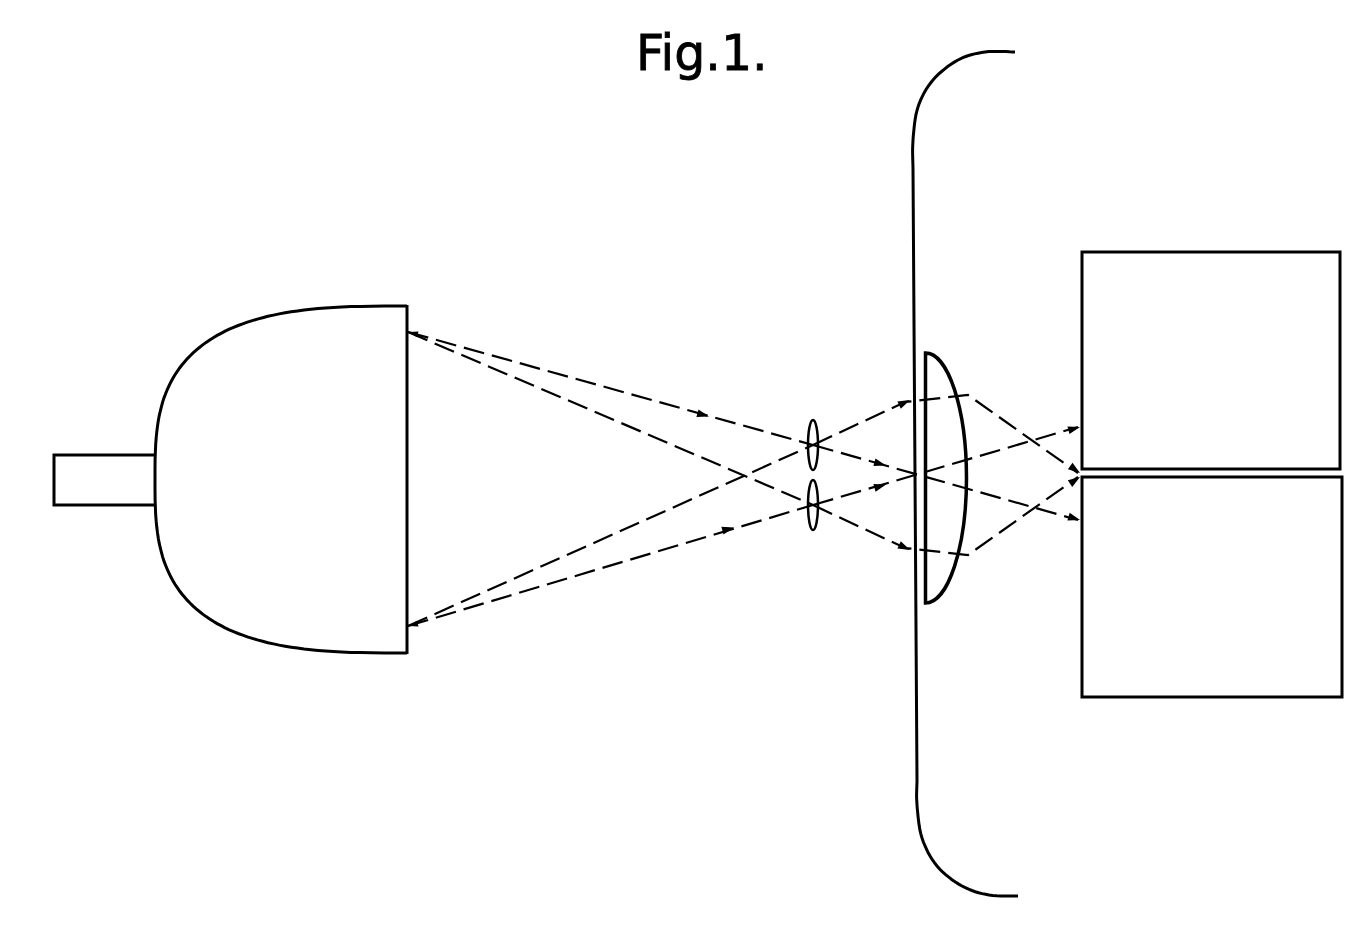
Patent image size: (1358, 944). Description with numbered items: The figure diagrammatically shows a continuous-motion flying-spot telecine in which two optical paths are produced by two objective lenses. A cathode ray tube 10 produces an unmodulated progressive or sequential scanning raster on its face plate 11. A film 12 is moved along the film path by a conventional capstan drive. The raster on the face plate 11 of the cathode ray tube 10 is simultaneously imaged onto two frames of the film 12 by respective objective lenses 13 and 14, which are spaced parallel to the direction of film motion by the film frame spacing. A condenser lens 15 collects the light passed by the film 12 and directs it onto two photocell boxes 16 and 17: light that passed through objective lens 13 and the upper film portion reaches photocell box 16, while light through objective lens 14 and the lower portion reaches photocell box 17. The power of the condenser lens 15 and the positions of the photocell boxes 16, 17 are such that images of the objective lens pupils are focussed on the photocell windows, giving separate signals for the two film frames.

The cathode ray tube 10 is at (293, 322).
The face plate 11 is at (408, 460).
The film 12 is at (927, 100).
The objective lens 13 is at (810, 427).
The objective lens 14 is at (813, 532).
The condenser lens 15 is at (948, 371).
The photocell box 16 is at (1167, 252).
The photocell box 17 is at (1152, 697).